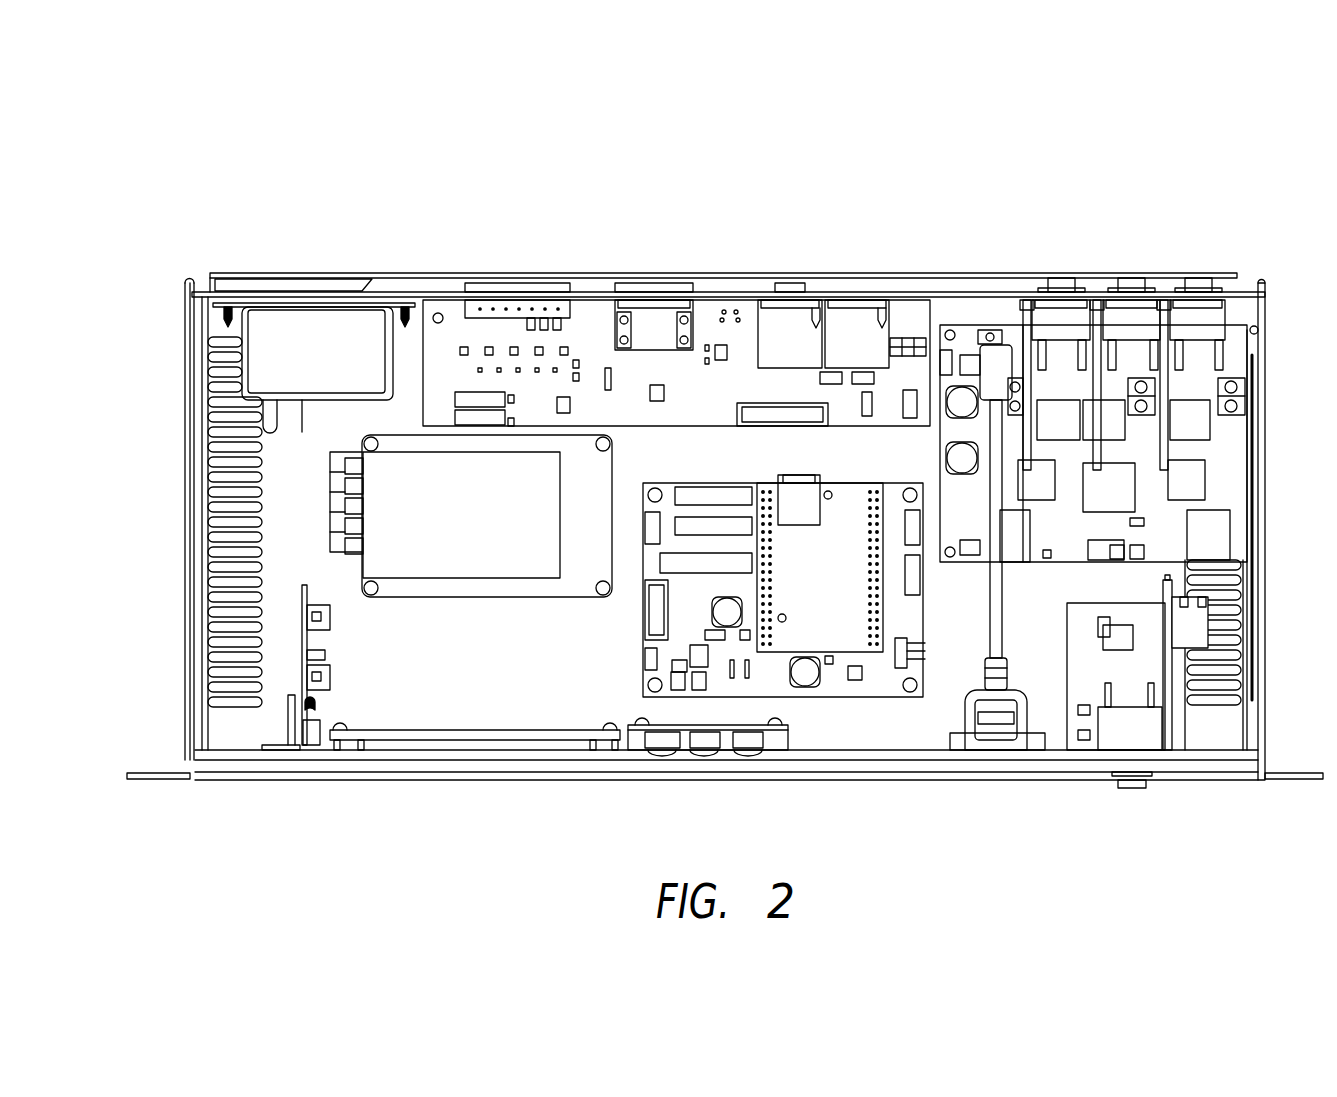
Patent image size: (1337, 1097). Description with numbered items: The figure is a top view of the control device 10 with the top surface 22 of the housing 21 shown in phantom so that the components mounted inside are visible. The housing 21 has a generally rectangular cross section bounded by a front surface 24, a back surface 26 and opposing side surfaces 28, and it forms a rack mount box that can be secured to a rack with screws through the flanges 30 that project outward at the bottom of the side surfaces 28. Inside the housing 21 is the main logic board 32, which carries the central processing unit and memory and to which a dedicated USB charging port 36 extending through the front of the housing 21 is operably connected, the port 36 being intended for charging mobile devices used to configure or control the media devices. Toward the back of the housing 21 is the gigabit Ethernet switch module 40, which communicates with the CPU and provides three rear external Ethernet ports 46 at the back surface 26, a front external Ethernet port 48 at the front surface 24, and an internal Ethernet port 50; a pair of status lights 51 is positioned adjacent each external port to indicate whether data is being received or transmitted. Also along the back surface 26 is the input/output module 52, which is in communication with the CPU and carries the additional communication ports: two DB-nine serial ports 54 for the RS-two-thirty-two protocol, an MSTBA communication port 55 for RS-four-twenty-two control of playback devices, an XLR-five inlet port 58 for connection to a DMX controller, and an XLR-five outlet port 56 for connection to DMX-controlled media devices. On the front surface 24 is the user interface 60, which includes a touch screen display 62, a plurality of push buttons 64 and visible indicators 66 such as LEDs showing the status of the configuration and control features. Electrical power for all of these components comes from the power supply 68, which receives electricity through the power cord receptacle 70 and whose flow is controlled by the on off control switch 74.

The control device 10 is at (1245, 157).
The housing 21 is at (398, 700).
The top surface 22 is at (885, 737).
The front surface 24 is at (1015, 770).
The back surface 26 is at (868, 290).
The side surfaces 28 is at (192, 520).
The flanges 30 is at (150, 780).
The main logic board 32 is at (802, 618).
The USB charging port 36 is at (985, 752).
The gigabit Ethernet switch module 40 is at (1228, 484).
The rear external Ethernet ports 46 is at (1060, 290).
The front external Ethernet port 48 is at (1133, 772).
The internal Ethernet port 50 is at (1222, 543).
The status lights 51 is at (1023, 310).
The input/output (I/O) module 52 is at (450, 306).
The serial ports 54 is at (655, 300).
The MSTBA communication port 55 is at (518, 303).
The XLR-5 outlet port 56 is at (845, 310).
The XLR-5 inlet port 58 is at (778, 312).
The user interface 60 is at (783, 815).
The display 62 is at (515, 750).
The push buttons 64 is at (735, 742).
The visible indicators 66 is at (312, 750).
The power supply 68 is at (475, 517).
The power cord receptacle 70 is at (328, 364).
The on off control switch 74 is at (365, 291).